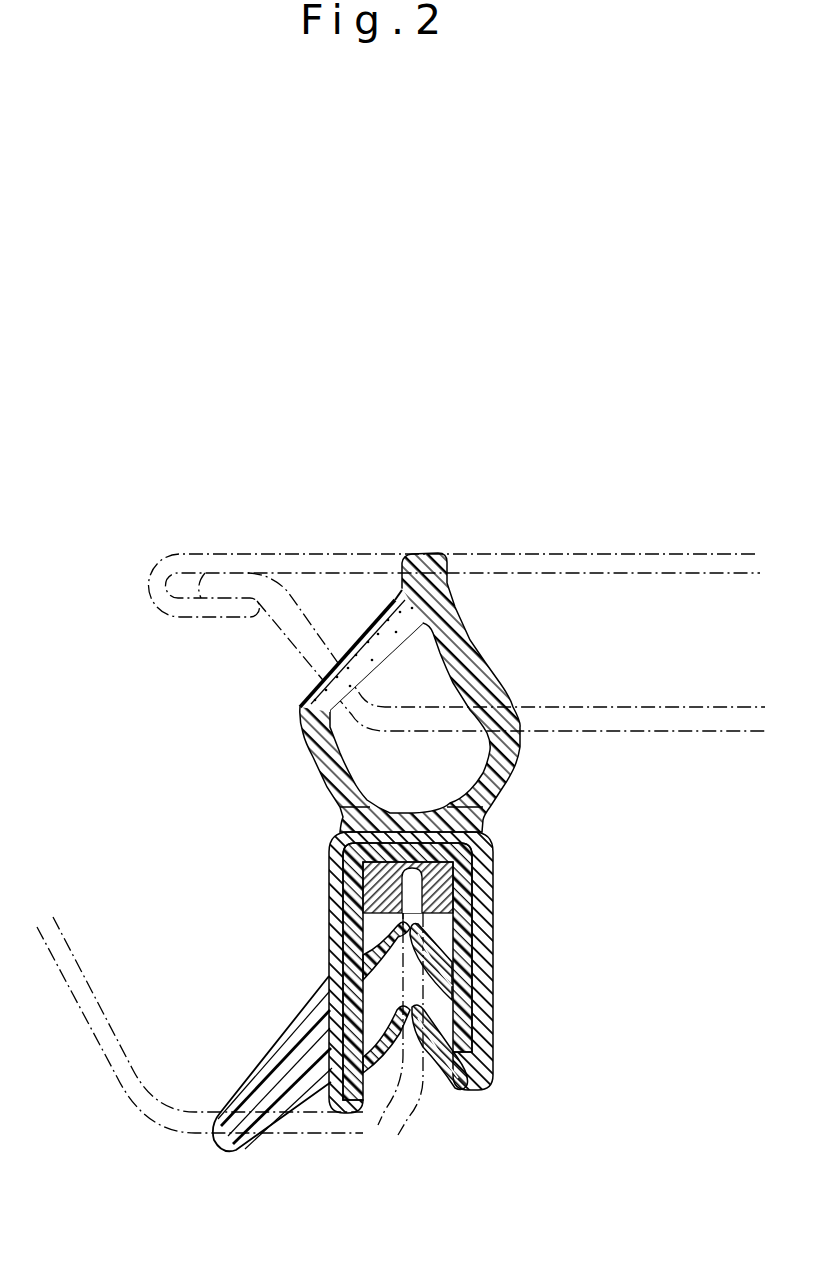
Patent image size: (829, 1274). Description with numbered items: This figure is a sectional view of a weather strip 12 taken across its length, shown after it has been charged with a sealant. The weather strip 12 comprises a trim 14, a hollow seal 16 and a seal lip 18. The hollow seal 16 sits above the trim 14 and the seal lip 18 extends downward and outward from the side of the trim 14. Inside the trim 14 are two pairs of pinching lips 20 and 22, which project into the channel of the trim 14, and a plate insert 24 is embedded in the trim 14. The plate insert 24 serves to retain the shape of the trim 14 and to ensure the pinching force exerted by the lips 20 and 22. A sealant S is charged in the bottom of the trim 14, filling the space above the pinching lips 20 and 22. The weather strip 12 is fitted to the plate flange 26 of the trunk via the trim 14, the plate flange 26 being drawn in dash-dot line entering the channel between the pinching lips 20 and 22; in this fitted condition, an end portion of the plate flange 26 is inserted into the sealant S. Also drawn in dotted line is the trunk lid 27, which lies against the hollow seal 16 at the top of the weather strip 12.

The weather strip 12 is at (312, 763).
The trim 14 is at (494, 925).
The hollow seal 16 is at (519, 765).
The seal lip 18 is at (283, 1090).
The pinching lips 20 is at (420, 964).
The pinching lips 22 is at (428, 1032).
The plate insert 24 is at (493, 857).
The plate flange 26 is at (412, 1088).
The trunk lid 27 is at (556, 555).
The sealant S is at (355, 870).